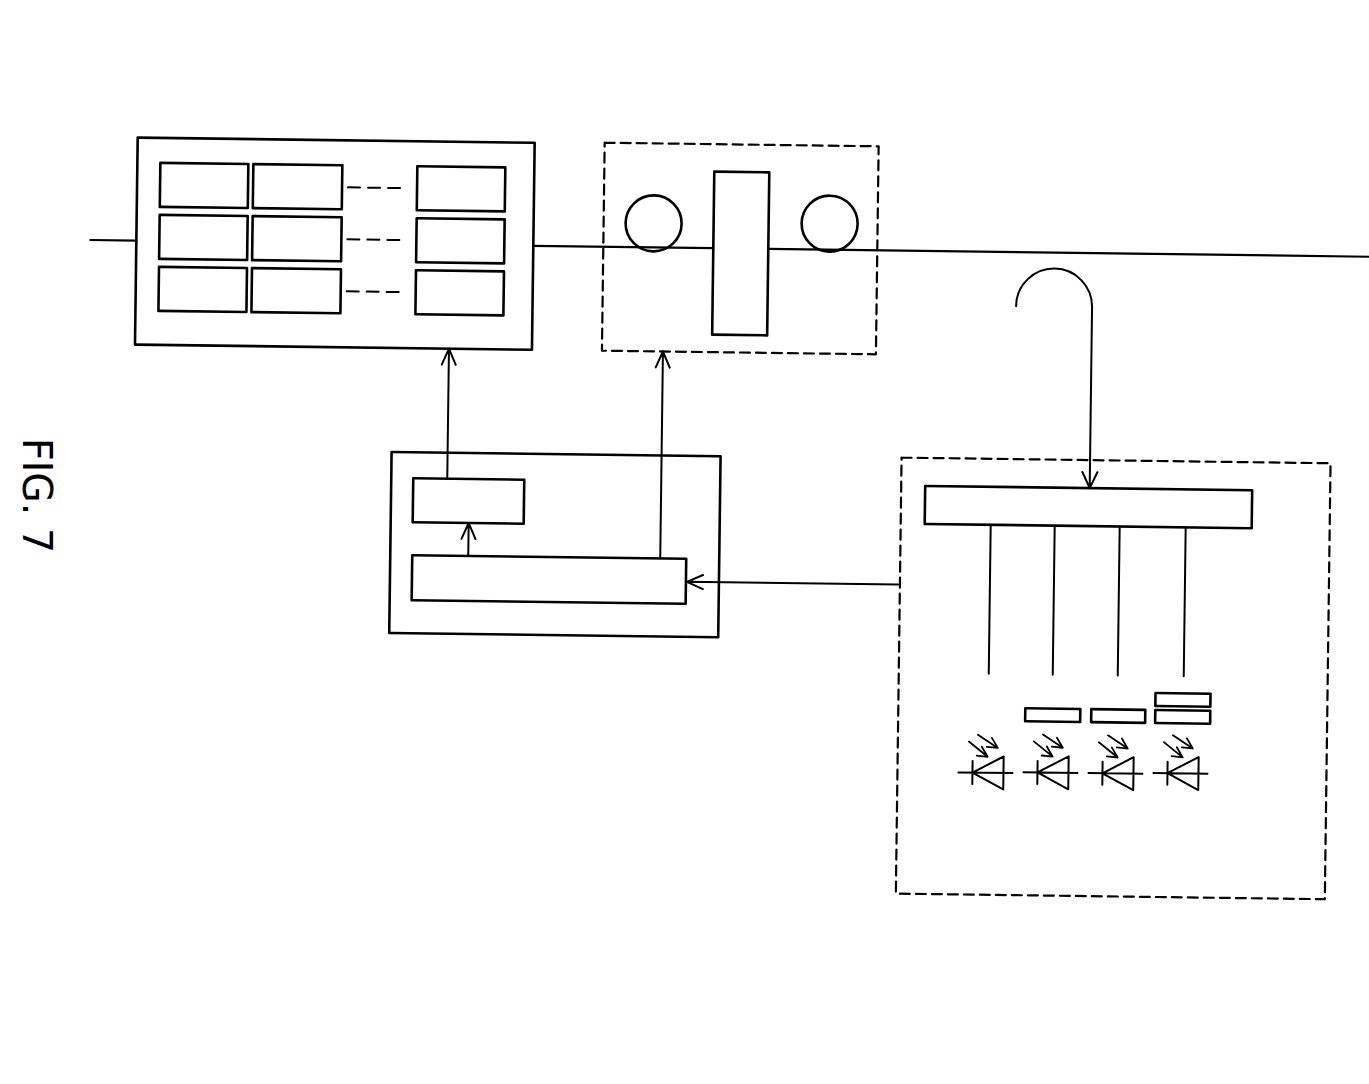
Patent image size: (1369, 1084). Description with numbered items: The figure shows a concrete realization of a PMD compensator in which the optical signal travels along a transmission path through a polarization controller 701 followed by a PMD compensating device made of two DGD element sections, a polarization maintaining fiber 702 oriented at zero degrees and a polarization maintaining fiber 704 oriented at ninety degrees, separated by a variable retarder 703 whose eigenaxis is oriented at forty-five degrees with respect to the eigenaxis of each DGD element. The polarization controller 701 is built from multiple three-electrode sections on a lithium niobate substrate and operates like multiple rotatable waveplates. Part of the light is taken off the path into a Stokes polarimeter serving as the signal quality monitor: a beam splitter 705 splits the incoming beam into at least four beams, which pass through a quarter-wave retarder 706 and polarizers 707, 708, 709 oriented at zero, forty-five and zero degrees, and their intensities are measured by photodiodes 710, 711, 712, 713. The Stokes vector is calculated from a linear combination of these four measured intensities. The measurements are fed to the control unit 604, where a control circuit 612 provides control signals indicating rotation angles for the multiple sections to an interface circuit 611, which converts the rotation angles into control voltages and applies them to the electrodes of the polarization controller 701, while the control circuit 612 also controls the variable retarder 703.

The polarization controller 701 is at (332, 145).
The polarization maintaining fiber 702 is at (649, 194).
The variable retarder 703 is at (736, 171).
The polarization maintaining fiber 704 is at (826, 193).
The beam splitter 705 is at (1252, 501).
The retarder 706 is at (1213, 693).
The polarizer 707 is at (1028, 711).
The polarizer 708 is at (1121, 705).
The polarizer 709 is at (1213, 711).
The photodiode 710 is at (989, 786).
The photodiode 711 is at (1057, 786).
The photodiode 712 is at (1127, 785).
The photodiode 713 is at (1192, 784).
The control unit 604 is at (515, 544).
The interface circuit 611 is at (524, 505).
The control circuit 612 is at (552, 559).